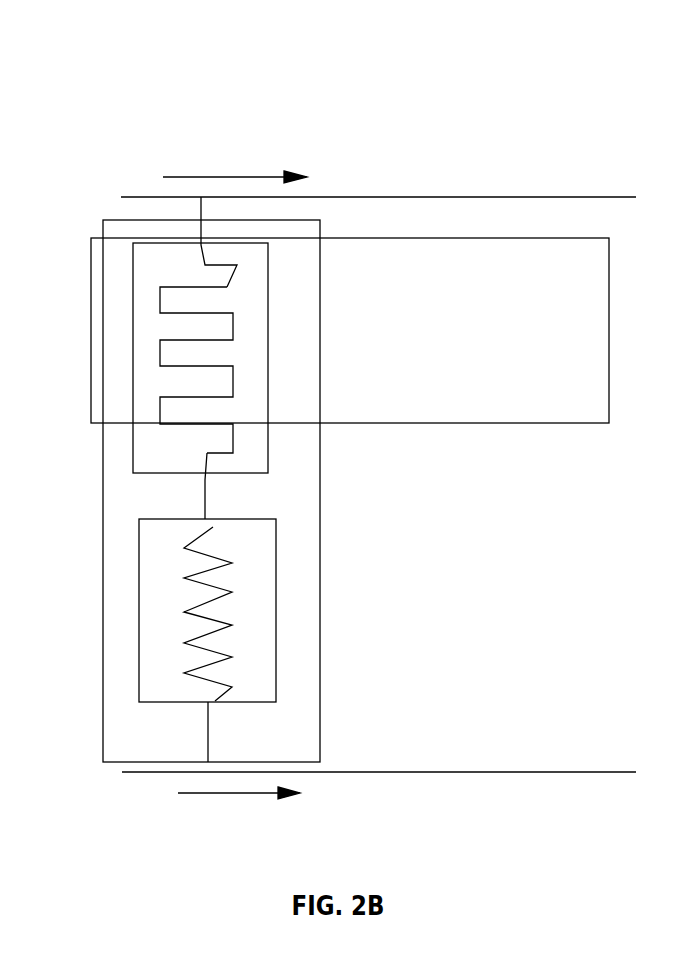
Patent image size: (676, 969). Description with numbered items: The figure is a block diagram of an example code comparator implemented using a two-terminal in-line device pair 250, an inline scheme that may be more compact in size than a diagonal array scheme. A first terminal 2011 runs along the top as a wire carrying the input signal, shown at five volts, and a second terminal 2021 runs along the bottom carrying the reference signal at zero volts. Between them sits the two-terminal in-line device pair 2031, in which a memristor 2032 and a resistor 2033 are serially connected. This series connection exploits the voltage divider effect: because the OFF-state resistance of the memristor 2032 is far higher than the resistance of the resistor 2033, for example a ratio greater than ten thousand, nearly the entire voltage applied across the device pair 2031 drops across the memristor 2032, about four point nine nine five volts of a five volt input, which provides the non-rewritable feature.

The two-terminal in-line device pair 250 is at (375, 52).
The first terminal 2011 is at (368, 197).
The second terminal 2021 is at (373, 772).
The two-terminal in-line device pair 2031 is at (103, 610).
The memristor 2032 is at (268, 327).
The resistor 2033 is at (276, 618).